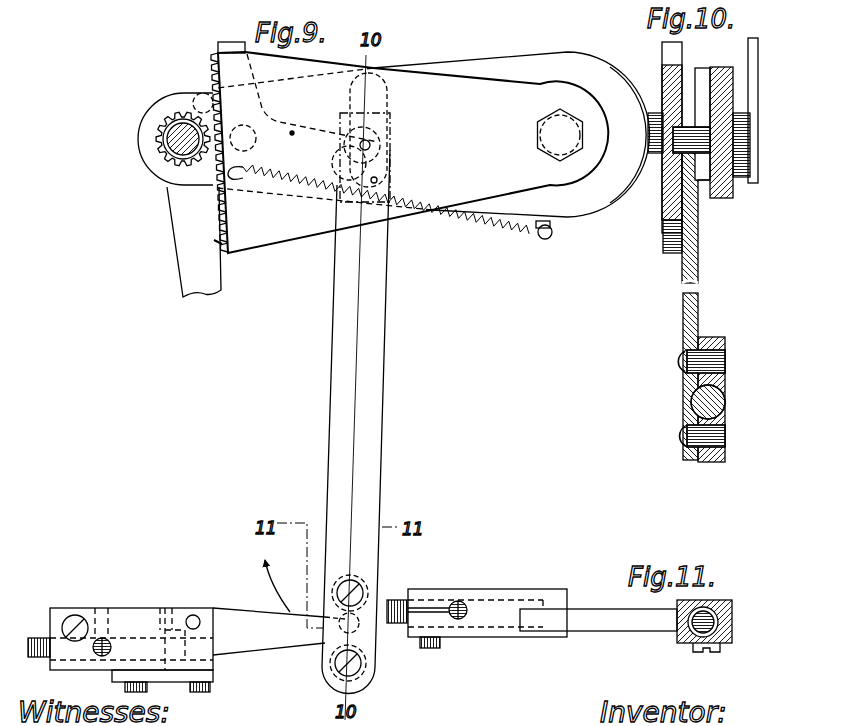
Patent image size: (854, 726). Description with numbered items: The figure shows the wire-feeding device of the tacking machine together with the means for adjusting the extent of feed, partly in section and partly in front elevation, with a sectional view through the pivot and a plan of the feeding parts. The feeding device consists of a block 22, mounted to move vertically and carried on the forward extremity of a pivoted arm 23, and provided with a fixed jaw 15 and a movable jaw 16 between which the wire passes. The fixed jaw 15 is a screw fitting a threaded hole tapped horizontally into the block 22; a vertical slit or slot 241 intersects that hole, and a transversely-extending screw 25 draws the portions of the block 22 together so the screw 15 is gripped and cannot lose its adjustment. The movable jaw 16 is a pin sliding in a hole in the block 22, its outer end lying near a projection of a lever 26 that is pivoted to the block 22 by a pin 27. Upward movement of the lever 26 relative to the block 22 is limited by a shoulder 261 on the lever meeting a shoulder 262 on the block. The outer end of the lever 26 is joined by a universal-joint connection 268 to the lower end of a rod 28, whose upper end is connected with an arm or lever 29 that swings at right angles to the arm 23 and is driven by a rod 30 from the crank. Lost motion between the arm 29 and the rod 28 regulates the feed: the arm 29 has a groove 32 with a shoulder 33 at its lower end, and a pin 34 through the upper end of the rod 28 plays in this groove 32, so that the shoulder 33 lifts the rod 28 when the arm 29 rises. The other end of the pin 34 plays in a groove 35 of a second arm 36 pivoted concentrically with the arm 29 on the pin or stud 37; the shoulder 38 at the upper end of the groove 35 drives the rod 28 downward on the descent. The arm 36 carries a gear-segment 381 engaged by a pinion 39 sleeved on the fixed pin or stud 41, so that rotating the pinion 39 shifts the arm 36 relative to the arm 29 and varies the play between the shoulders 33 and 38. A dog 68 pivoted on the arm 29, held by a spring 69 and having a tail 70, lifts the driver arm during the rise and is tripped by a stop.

In FIG. 9, the fixed jaw 15 is at (40, 658).
In FIG. 11, the fixed jaw 15 is at (395, 622).
In FIG. 9, the movable jaw 16 is at (110, 655).
In FIG. 11, the movable jaw 16 is at (466, 608).
In FIG. 9, the block 22 is at (57, 596).
In FIG. 11, the block 22 is at (500, 638).
In FIG. 9, the arm 23 is at (178, 684).
In FIG. 9, the transversely-extending screw 25 is at (77, 614).
In FIG. 11, the transversely-extending screw 25 is at (430, 648).
In FIG. 9, the lever 26 is at (279, 631).
In FIG. 11, the lever 26 is at (607, 632).
In FIG. 9, the pin 27 is at (197, 617).
In FIG. 9, the rod 28 is at (356, 403).
In FIG. 10, the rod 28 is at (680, 314).
In FIG. 9, the arm or lever 29 is at (434, 134).
In FIG. 10, the arm or lever 29 is at (736, 93).
In FIG. 9, the rod 30 is at (208, 280).
In FIG. 9, the groove 32 is at (386, 82).
In FIG. 10, the groove 32 is at (703, 78).
In FIG. 9, the shoulder 33 is at (380, 179).
In FIG. 10, the shoulder 33 is at (705, 198).
In FIG. 9, the pin 34 is at (378, 147).
In FIG. 10, the pin 34 is at (712, 138).
In FIG. 10, the groove 35 is at (662, 205).
In FIG. 9, the arm 36 is at (400, 152).
In FIG. 10, the arm 36 is at (661, 240).
In FIG. 9, the pin or stud 37 is at (547, 121).
In FIG. 9, the shoulder 38 is at (372, 131).
In FIG. 10, the shoulder 38 is at (681, 120).
In FIG. 9, the pinion 39 is at (166, 114).
In FIG. 9, the fixed pin or stud 41 is at (170, 147).
In FIG. 9, the dog 68 is at (232, 41).
In FIG. 10, the dog 68 is at (760, 58).
In FIG. 9, the spring 69 is at (472, 235).
In FIG. 9, the tail 70 is at (292, 131).
In FIG. 10, the tail 70 is at (752, 167).
In FIG. 11, the vertical slit or slot 241 is at (420, 610).
In FIG. 9, the shoulder 261 is at (172, 617).
In FIG. 9, the shoulder 262 is at (158, 616).
In FIG. 9, the universal-joint connection 268 is at (352, 636).
In FIG. 10, the universal-joint connection 268 is at (688, 402).
In FIG. 11, the universal-joint connection 268 is at (710, 623).
In FIG. 9, the gear-segment 381 is at (215, 244).